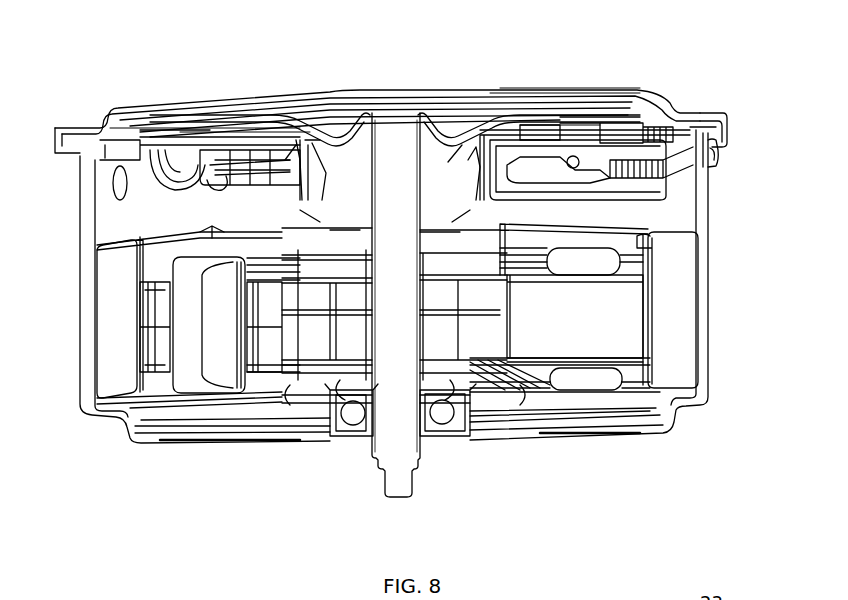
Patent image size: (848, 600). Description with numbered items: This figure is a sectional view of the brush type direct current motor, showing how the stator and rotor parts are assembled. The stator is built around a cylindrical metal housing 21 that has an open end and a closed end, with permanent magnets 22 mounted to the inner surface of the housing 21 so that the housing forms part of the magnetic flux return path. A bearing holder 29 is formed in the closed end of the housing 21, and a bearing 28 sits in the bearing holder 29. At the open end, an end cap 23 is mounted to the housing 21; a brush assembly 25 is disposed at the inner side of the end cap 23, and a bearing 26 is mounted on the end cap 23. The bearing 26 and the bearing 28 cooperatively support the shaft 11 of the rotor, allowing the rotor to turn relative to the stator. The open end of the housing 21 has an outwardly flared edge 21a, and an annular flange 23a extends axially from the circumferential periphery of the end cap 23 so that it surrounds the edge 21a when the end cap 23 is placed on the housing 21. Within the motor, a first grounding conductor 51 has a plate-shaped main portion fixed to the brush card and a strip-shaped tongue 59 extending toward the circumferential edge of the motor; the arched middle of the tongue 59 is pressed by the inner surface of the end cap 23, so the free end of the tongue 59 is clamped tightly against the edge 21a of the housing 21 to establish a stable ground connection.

The shaft 11 is at (403, 160).
The housing 21 is at (705, 257).
The edge 21a is at (712, 160).
The permanent magnets 22 is at (118, 307).
The end cap 23 is at (128, 100).
The annular flange 23a is at (728, 116).
The brush assembly 25 is at (243, 140).
The bearing 26 is at (358, 140).
The bearing 28 is at (335, 436).
The bearing holder 29 is at (472, 437).
The first grounding conductor 51 is at (680, 120).
The tongue 59 is at (657, 162).